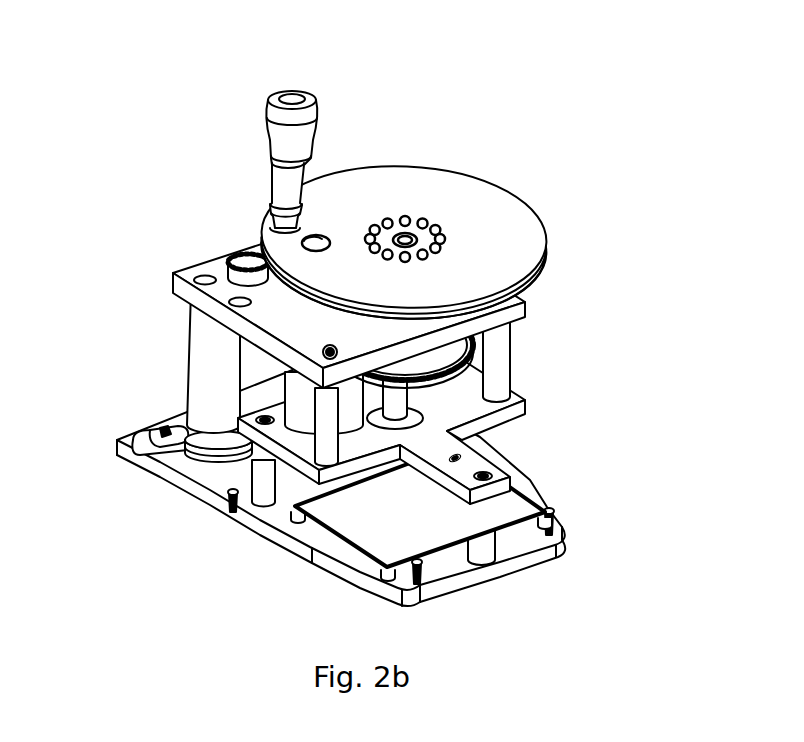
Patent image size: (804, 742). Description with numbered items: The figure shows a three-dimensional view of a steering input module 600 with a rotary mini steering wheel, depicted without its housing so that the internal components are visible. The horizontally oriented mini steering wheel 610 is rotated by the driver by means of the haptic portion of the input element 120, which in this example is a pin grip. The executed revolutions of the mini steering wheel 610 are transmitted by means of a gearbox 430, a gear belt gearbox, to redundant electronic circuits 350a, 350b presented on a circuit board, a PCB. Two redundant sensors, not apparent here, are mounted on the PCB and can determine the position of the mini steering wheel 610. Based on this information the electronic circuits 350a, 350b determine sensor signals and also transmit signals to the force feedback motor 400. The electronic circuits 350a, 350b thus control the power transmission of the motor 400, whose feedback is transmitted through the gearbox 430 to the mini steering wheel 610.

The haptic portion of the input element 120 is at (246, 98).
The electronic circuit 350a is at (285, 474).
The electronic circuit 350b is at (378, 532).
The force feedback motor 400 is at (223, 365).
The gearbox 430 is at (445, 462).
The steering input module 600 is at (362, 333).
The mini steering wheel 610 is at (400, 207).